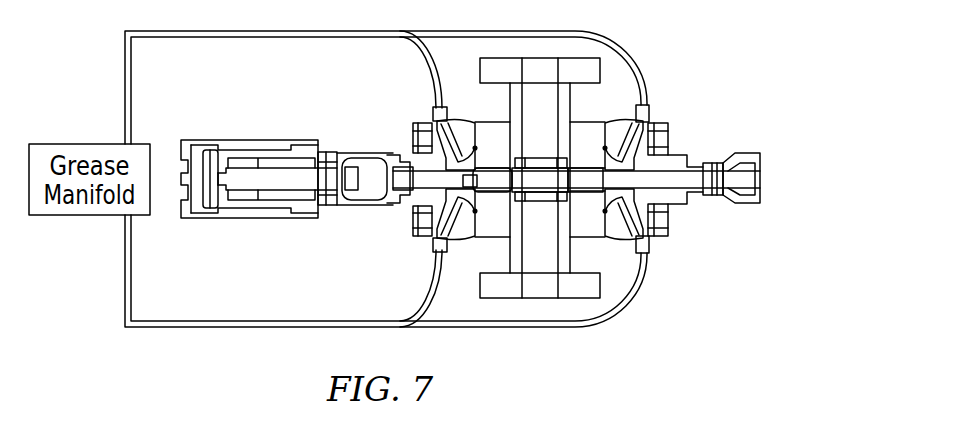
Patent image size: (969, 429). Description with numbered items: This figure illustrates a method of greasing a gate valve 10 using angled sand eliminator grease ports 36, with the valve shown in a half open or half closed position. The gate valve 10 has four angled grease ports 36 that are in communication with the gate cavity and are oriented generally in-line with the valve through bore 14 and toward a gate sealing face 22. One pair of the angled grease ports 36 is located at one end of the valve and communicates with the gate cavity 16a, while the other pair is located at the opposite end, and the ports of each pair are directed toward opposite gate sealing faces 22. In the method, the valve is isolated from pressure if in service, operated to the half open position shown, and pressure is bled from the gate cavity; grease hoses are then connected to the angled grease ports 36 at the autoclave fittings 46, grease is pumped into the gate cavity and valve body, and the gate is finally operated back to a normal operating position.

The gate valve 10 is at (732, 46).
The valve through bore 14 is at (553, 117).
The gate cavity 16a is at (620, 163).
The gate sealing face 22 is at (578, 195).
The angled grease port 36 is at (548, 179).
The autoclave fitting 46 is at (528, 166).